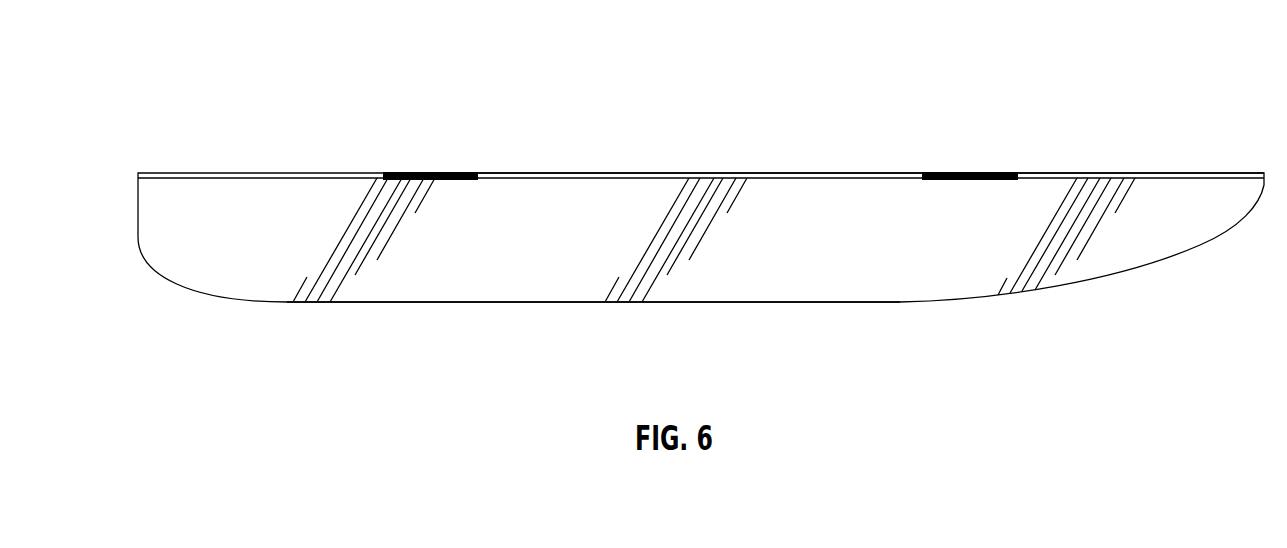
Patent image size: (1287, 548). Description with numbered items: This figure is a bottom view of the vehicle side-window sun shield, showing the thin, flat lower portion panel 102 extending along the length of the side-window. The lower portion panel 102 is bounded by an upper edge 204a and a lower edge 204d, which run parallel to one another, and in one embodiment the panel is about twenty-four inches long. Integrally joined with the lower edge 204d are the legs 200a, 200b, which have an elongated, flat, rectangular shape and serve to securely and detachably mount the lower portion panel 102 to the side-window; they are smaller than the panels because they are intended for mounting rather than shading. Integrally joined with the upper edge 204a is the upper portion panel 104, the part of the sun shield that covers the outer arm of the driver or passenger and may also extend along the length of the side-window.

The lower portion panel 102 is at (364, 162).
The upper portion panel 104 is at (304, 312).
The leg 200a is at (452, 162).
The leg 200b is at (962, 160).
The upper edge 204a is at (1197, 175).
The lower edge 204d is at (808, 173).